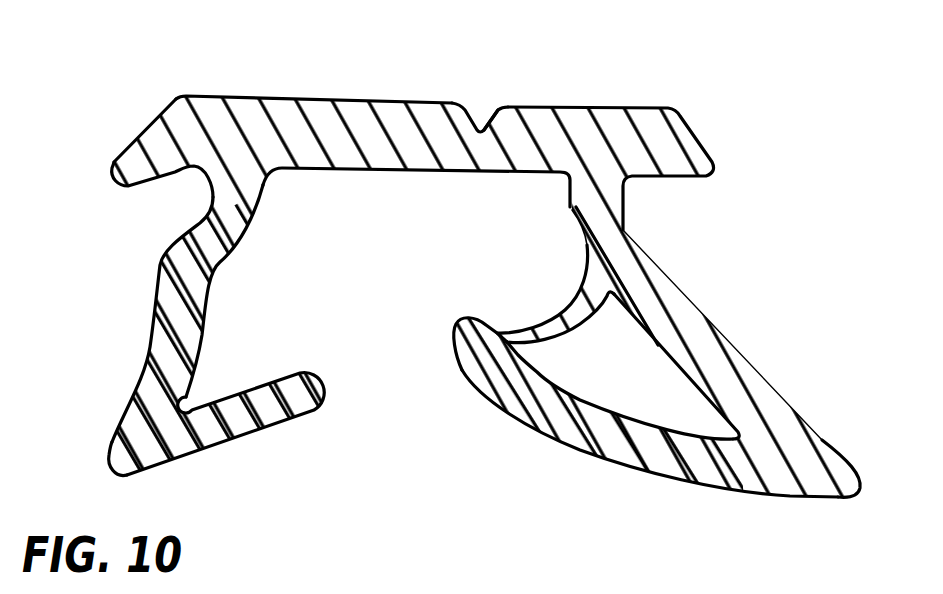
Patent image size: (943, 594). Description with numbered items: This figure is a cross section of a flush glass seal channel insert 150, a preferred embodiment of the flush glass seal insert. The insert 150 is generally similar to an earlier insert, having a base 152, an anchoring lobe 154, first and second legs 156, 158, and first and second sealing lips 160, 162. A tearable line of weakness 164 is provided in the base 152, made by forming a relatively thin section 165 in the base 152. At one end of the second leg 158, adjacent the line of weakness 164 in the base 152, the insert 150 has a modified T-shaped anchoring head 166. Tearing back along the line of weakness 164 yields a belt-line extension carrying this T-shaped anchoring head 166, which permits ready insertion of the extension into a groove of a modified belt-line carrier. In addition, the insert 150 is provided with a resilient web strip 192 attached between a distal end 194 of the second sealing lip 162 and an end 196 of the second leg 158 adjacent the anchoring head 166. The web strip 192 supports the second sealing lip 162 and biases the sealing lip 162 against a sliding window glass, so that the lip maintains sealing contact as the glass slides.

The insert 150 is at (424, 91).
The base 152 is at (333, 99).
The anchoring lobe 154 is at (127, 162).
The first leg 156 is at (157, 339).
The second leg 158 is at (715, 323).
The first sealing lip 160 is at (273, 418).
The second sealing lip 162 is at (627, 463).
The line of weakness 164 is at (474, 122).
The thin section 165 is at (488, 140).
The T-shaped anchoring head 166 is at (632, 122).
The web strip 192 is at (556, 328).
The distal end 194 is at (456, 353).
The end 196 is at (570, 210).